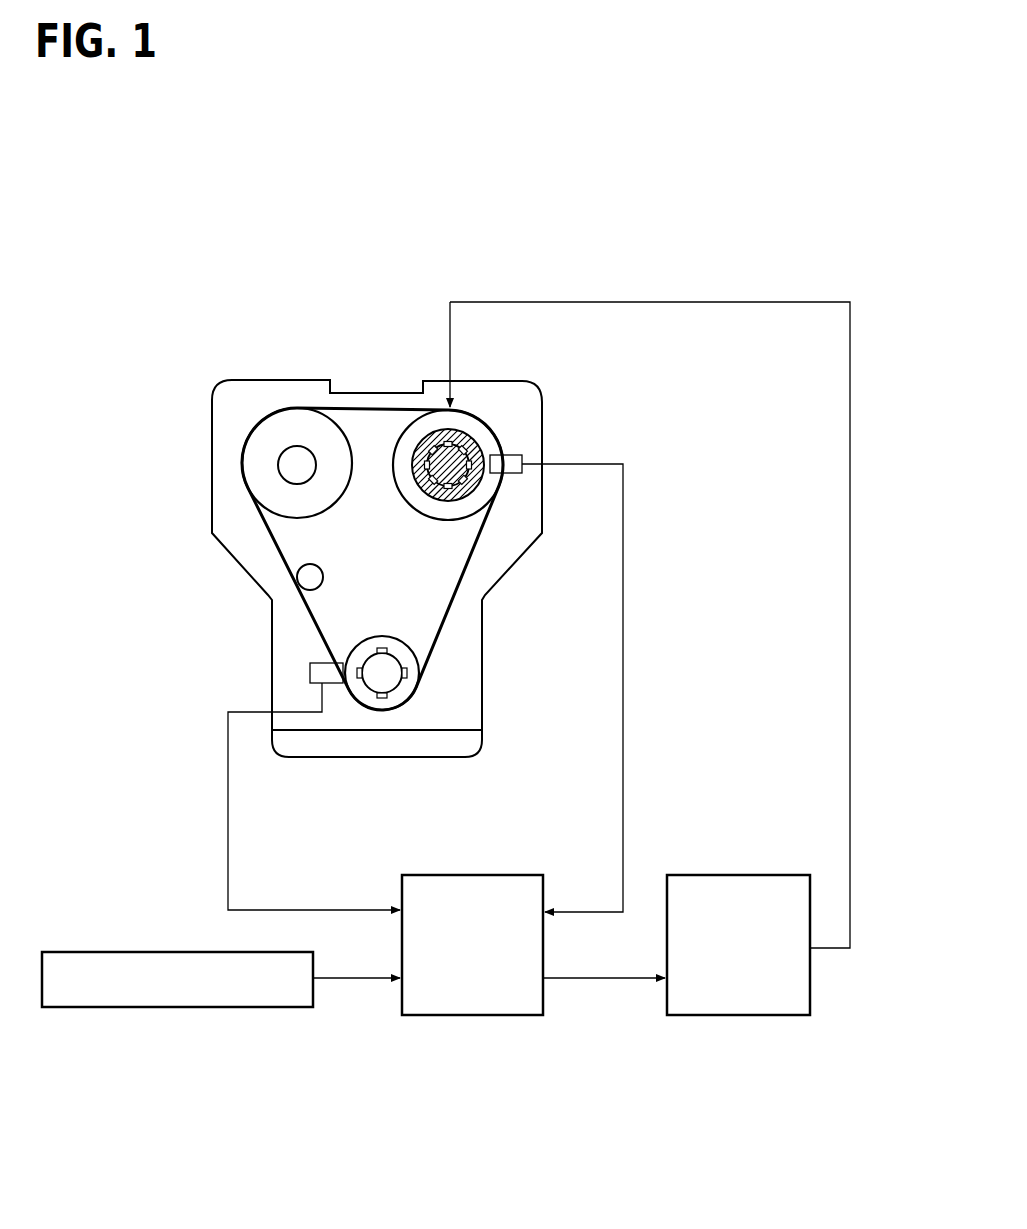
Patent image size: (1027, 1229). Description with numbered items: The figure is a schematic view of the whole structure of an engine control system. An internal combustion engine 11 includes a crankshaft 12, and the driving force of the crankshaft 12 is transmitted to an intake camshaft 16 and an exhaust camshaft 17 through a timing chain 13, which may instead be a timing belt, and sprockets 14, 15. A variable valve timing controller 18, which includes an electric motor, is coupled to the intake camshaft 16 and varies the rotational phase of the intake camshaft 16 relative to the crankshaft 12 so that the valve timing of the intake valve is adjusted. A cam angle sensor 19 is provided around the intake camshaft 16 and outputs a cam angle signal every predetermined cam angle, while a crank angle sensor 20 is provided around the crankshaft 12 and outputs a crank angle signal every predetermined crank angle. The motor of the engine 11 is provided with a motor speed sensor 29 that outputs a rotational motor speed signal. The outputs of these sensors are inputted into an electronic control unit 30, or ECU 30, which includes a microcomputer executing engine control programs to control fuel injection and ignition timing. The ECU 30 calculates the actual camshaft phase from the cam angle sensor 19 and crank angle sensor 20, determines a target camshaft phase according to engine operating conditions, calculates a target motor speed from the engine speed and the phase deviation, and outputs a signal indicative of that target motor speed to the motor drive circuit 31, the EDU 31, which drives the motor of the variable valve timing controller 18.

The internal combustion engine 11 is at (286, 375).
The crankshaft 12 is at (392, 683).
The timing chain 13 is at (440, 640).
The sprocket 14 is at (463, 417).
The sprocket 15 is at (267, 440).
The intake camshaft 16 is at (440, 425).
The exhaust camshaft 17 is at (292, 465).
The variable valve timing controller 18 is at (485, 429).
The cam angle sensor 19 is at (517, 452).
The crank angle sensor 20 is at (310, 673).
The motor speed sensor 29 is at (183, 1007).
The electronic control unit 30 is at (477, 1015).
The motor drive circuit 31 is at (743, 1015).